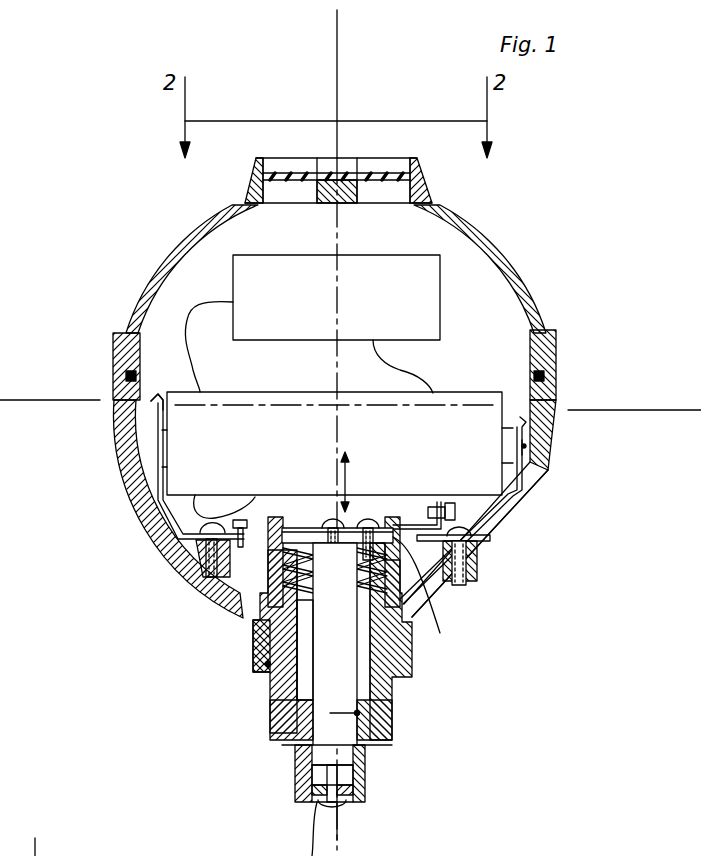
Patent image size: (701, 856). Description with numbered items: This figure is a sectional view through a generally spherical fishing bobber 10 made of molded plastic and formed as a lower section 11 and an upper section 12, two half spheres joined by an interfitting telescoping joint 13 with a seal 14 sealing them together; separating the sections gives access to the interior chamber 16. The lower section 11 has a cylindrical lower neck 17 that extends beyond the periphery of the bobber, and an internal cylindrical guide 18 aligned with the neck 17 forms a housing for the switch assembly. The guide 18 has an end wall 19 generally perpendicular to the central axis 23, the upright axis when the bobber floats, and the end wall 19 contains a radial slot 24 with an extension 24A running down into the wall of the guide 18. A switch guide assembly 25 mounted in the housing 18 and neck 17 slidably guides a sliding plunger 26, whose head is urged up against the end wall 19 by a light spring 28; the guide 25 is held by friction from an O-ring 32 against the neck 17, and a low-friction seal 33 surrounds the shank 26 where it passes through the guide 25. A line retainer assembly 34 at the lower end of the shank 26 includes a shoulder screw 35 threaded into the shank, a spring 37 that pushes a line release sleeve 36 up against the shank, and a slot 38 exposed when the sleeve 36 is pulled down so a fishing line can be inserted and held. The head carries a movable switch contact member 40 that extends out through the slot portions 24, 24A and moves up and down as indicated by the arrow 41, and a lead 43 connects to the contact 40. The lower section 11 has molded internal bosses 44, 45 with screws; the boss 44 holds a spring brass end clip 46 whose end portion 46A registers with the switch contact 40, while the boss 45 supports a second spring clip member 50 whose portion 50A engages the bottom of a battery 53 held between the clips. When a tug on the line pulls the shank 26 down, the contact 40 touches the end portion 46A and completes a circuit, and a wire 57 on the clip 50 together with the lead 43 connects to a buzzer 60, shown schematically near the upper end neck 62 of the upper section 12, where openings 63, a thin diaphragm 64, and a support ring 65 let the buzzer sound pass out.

The fishing bobber 10 is at (153, 238).
The lower section 11 is at (157, 543).
The upper section 12 is at (490, 240).
The telescoping joint 13 is at (125, 378).
The seal 14 is at (124, 371).
The interior chamber 16 is at (527, 447).
The lower neck 17 is at (413, 667).
The internal cylindrical guide 18 is at (290, 520).
The end wall 19 is at (292, 548).
The central axis 23 is at (337, 36).
The radial slot 24 is at (393, 503).
The slot extension 24A is at (440, 633).
The switch guide assembly 25 is at (388, 713).
The sliding plunger 26 is at (343, 648).
The spring 28 is at (300, 535).
The O-ring 32 is at (268, 664).
The seal 33 is at (306, 714).
The line retainer assembly 34 is at (286, 773).
The shoulder screw 35 is at (347, 803).
The line release sleeve 36 is at (367, 773).
The spring 37 is at (367, 793).
The slot 38 is at (297, 745).
The switch contact member 40 is at (393, 523).
The arrow 41 is at (357, 467).
The lead 43 is at (456, 508).
The internal boss 44 is at (470, 548).
The internal boss 45 is at (197, 562).
The end clip 46 is at (507, 512).
The clip end portion 46A is at (424, 600).
The second spring clip member 50 is at (153, 520).
The clip portion 50A is at (157, 437).
The battery 53 is at (268, 368).
The wire 57 is at (215, 518).
The buzzer 60 is at (247, 275).
The upper end neck 62 is at (428, 174).
The openings 63 is at (394, 160).
The diaphragm 64 is at (375, 158).
The support ring 65 is at (246, 192).